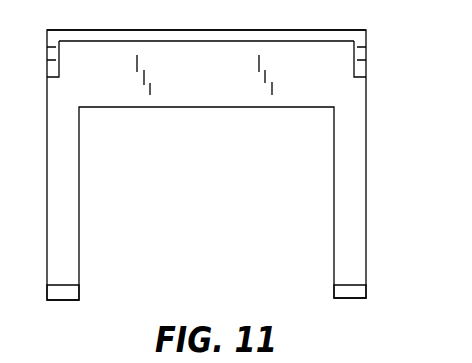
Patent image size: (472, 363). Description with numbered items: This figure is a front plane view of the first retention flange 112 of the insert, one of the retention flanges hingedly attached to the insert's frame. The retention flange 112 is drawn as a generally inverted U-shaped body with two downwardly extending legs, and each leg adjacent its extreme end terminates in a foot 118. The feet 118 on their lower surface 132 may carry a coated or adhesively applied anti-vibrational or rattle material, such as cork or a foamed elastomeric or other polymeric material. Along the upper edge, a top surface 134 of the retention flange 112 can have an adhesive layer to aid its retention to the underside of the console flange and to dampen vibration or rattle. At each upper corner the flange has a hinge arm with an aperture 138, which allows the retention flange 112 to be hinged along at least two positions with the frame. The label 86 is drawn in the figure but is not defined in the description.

The frame member 86 is at (366, 190).
The first retention flange 112 is at (143, 30).
The top surface 134 is at (245, 30).
The aperture 138 is at (366, 52).
The lower surface 132 is at (63, 300).
The foot 118 is at (366, 293).